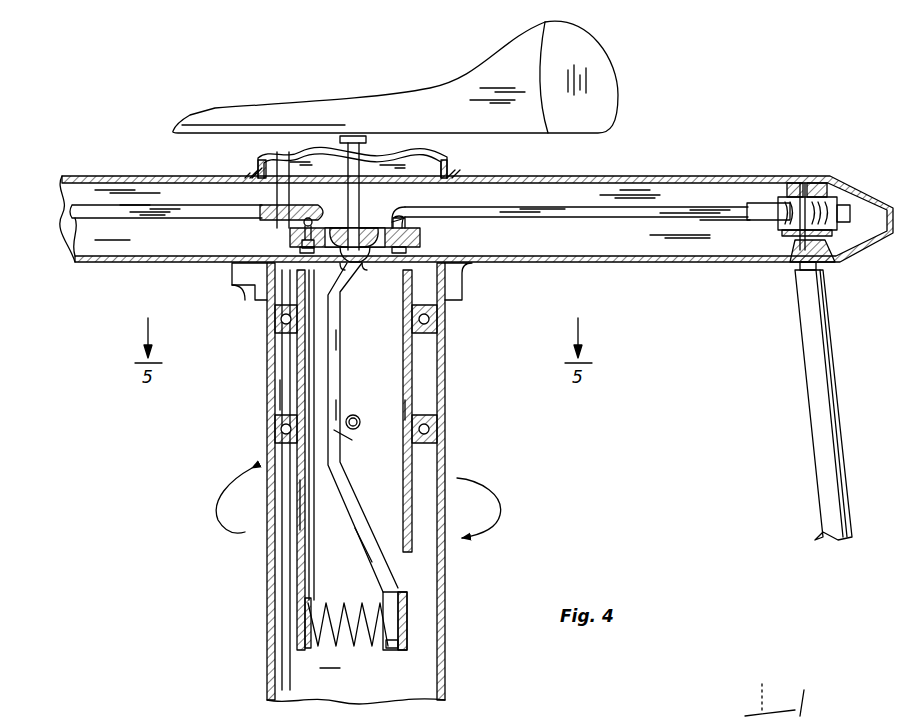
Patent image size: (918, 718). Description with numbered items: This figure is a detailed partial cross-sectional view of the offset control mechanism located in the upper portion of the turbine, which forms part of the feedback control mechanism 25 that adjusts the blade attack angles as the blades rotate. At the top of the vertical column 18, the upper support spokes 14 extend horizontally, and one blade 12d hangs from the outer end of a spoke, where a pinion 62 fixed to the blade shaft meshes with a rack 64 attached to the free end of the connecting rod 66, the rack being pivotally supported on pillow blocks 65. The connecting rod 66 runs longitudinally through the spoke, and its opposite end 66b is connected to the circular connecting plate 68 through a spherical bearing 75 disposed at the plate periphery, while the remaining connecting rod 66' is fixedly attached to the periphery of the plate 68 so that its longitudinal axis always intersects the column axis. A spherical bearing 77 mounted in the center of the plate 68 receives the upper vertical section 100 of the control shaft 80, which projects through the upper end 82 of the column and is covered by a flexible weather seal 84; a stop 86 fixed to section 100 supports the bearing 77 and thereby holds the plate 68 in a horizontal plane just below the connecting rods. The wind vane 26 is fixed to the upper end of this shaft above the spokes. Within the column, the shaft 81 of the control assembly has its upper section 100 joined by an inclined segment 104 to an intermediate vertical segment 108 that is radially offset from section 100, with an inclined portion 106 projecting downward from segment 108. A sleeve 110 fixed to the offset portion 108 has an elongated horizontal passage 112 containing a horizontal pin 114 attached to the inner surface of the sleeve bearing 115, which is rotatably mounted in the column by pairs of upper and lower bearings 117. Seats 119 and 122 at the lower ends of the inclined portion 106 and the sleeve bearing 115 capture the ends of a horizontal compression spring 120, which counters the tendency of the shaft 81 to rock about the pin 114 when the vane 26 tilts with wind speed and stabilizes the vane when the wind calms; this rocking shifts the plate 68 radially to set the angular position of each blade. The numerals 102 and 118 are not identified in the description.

The air foil blade 12d is at (826, 412).
The upper support spokes 14 is at (125, 282).
The vertical column 18 is at (443, 340).
The feedback control mechanism 25 is at (288, 395).
The wind vane 26 is at (380, 88).
The pinion 62 is at (768, 212).
The rack 64 is at (845, 202).
The pillow blocks 65 is at (822, 200).
The connecting rod 66 is at (166, 181).
The connecting rod 66' is at (597, 182).
The opposite end of connecting rod 66b is at (395, 213).
The circular connecting plate 68 is at (408, 233).
The spherical bearing 75 is at (304, 223).
The spherical bearing 77 is at (335, 226).
The control shaft 80 is at (448, 292).
The shaft 81 is at (300, 355).
The upper end of column 82 is at (450, 165).
The flexible weather seal 84 is at (350, 175).
The stop 86 is at (440, 258).
The upper vertical section 100 is at (353, 178).
The arm assembly 102 is at (430, 405).
The inclined segment 104 is at (338, 292).
The inclined portion 106 is at (355, 515).
The intermediate vertical segment 108 is at (340, 375).
The sleeve 110 is at (357, 428).
The horizontal passage 112 is at (356, 416).
The horizontal pin 114 is at (348, 448).
The sleeve bearing 115 is at (300, 523).
The bearings 117 is at (278, 318).
The plate 118 is at (407, 602).
The seat 119 is at (400, 645).
The compression spring 120 is at (358, 648).
The seat 122 is at (310, 625).